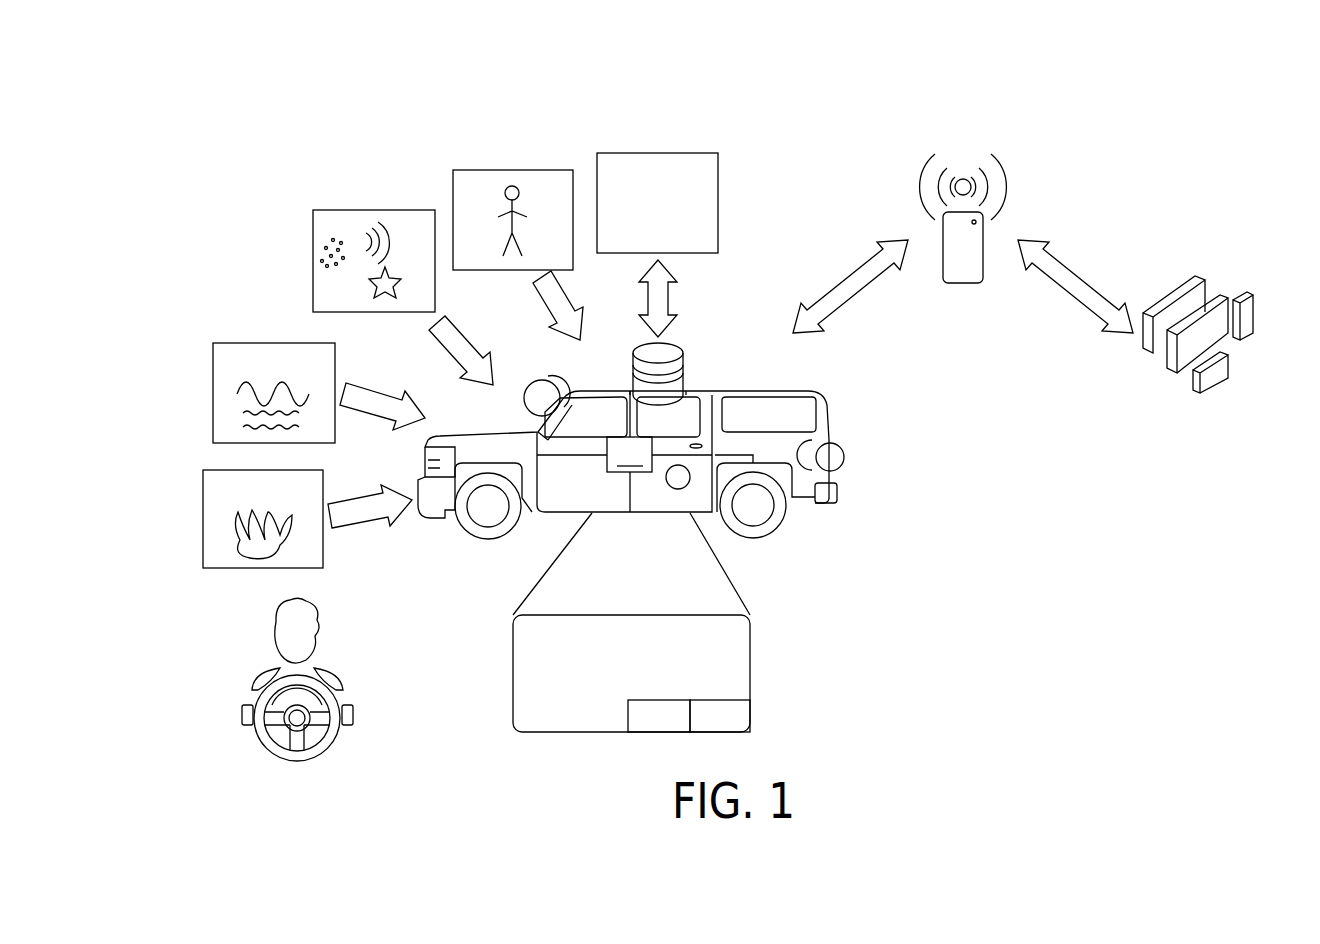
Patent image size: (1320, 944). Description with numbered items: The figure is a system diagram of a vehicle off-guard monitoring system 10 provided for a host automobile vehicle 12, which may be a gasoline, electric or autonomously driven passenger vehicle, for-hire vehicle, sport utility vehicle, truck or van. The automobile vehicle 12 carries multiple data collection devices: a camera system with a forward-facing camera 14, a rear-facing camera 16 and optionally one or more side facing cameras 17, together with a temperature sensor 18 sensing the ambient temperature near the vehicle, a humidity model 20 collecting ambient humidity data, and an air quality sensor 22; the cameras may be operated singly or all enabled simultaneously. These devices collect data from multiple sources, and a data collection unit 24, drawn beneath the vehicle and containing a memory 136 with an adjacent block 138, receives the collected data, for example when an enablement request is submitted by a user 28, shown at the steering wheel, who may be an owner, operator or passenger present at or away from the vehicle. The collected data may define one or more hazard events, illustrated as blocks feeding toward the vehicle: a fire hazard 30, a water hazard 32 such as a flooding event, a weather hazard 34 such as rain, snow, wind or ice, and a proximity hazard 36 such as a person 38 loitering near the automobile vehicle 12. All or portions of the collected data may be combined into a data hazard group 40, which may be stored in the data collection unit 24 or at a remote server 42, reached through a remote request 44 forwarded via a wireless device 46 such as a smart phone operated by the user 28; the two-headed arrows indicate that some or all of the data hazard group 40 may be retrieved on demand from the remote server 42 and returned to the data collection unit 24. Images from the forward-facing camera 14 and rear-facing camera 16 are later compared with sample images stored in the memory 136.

The vehicle off-guard monitoring system 10 is at (828, 140).
The automobile vehicle 12 is at (818, 409).
The forward-facing camera 14 is at (540, 401).
The rear-facing camera 16 is at (836, 453).
The side facing camera 17 is at (683, 485).
The temperature sensor 18 is at (664, 354).
The humidity model 20 is at (678, 380).
The air quality sensor 22 is at (673, 398).
The data collection unit 24 is at (646, 688).
The user 28 is at (288, 622).
The fire hazard 30 is at (277, 501).
The water hazard 32 is at (288, 378).
The weather hazard 34 is at (426, 256).
The proximity hazard 36 is at (490, 233).
The person 38 is at (516, 203).
The data hazard group 40 is at (671, 216).
The remote server 42 is at (1210, 305).
The remote request 44 is at (847, 290).
The wireless device 46 is at (965, 265).
The memory 136 is at (682, 728).
The memory 138 is at (741, 728).